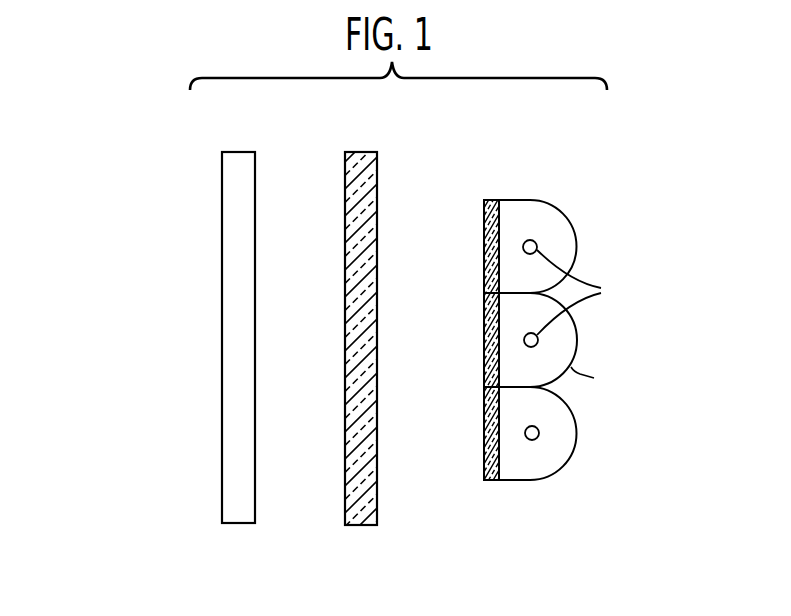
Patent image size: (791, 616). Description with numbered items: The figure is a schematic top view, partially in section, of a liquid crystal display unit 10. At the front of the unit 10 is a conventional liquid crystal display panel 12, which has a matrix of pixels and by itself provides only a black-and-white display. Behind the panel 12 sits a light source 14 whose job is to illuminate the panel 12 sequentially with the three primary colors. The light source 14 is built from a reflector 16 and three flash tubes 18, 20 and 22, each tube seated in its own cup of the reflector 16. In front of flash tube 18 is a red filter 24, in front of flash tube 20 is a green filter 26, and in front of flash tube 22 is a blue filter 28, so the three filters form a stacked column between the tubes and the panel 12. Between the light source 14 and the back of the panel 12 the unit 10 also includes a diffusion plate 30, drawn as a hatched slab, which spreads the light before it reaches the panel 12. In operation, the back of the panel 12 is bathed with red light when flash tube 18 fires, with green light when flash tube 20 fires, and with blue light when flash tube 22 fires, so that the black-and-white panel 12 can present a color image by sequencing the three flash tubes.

The liquid crystal display unit 10 is at (638, 150).
The liquid crystal display panel 12 is at (230, 222).
The light source 14 is at (563, 354).
The reflector 16 is at (578, 435).
The flash tube 18 is at (535, 243).
The flash tube 20 is at (538, 339).
The flash tube 22 is at (542, 440).
The red filter 24 is at (484, 235).
The green filter 26 is at (483, 348).
The blue filter 28 is at (487, 443).
The diffusion plate 30 is at (360, 152).